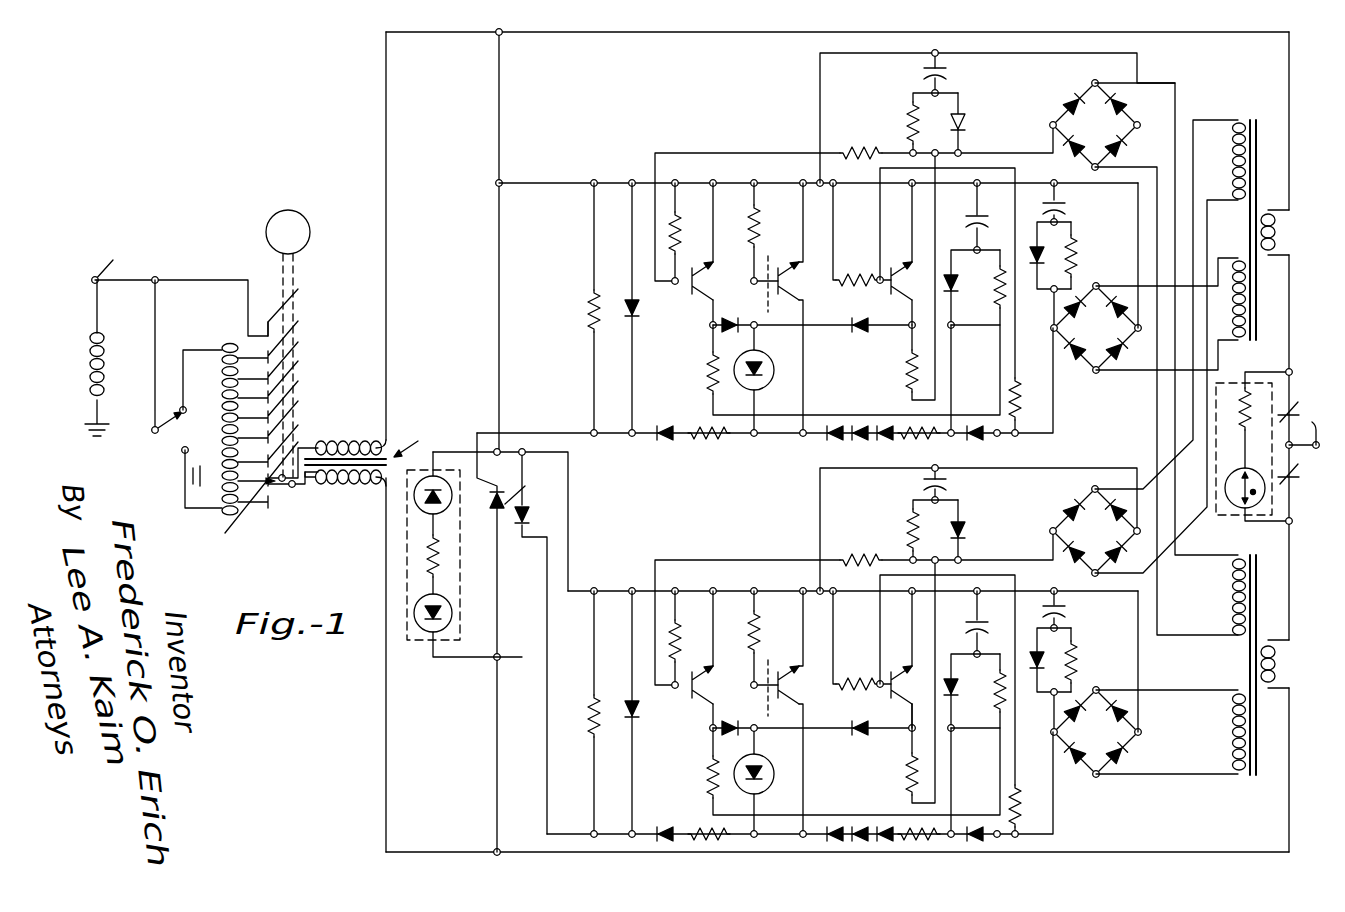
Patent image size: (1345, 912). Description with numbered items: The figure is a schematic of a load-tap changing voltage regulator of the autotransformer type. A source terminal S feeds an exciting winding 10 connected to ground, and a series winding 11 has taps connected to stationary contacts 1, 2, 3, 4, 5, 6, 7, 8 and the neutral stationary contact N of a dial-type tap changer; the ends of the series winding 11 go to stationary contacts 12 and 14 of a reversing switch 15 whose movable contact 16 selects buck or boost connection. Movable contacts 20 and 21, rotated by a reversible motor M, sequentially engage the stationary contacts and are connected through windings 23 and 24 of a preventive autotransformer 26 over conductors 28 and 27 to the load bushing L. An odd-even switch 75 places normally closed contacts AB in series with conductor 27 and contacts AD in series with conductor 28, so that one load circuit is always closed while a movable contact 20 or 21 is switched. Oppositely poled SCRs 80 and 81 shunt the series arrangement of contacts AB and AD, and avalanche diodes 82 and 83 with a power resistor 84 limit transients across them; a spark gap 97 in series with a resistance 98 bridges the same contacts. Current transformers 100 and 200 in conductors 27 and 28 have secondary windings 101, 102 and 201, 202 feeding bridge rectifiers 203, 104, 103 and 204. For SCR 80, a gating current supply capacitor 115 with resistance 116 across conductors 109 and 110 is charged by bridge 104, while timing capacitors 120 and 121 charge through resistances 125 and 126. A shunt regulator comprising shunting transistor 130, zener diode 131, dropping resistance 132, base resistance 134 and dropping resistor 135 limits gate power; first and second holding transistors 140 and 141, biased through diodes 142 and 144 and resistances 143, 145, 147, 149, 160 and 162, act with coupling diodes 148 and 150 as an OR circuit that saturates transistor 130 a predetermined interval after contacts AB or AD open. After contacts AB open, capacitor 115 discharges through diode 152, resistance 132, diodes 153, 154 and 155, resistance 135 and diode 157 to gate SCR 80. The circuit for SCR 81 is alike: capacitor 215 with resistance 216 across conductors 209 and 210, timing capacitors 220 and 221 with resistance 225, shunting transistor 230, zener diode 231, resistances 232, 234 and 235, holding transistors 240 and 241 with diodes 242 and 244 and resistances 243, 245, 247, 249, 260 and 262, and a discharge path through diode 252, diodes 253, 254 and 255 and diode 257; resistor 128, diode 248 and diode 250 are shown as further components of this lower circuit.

The stationary contact 1 is at (278, 332).
The stationary contact 2 is at (279, 352).
The stationary contact 3 is at (279, 372).
The stationary contact 4 is at (279, 393).
The stationary contact 5 is at (279, 413).
The stationary contact 6 is at (256, 500).
The stationary contact 7 is at (268, 480).
The stationary contact 8 is at (284, 496).
The exciting winding 10 is at (90, 378).
The series winding 11 is at (216, 476).
The stationary contact of reversing switch 12 is at (201, 381).
The stationary contact of reversing switch 14 is at (180, 455).
The reversing switch 15 is at (198, 447).
The movable contact 16 is at (176, 416).
The movable contact 20 is at (282, 487).
The movable contact 21 is at (280, 442).
The reactor winding 23 is at (346, 485).
The reactor winding 24 is at (358, 443).
The preventive autotransformer 26 is at (414, 433).
The conductor 27 is at (614, 34).
The conductor 28 is at (605, 852).
The odd-even switch 75 is at (1320, 473).
The silicon controlled rectifier 80 is at (514, 642).
The silicon controlled rectifier 81 is at (530, 517).
The avalanche diode 82 is at (440, 505).
The avalanche diode 83 is at (446, 598).
The power resistor 84 is at (440, 560).
The spark gap 97 is at (1231, 479).
The resistance 98 is at (1250, 426).
The current transformer 100 is at (1316, 246).
The secondary winding 101 is at (1230, 164).
The secondary winding 102 is at (1238, 338).
The bridge rectifier 103 is at (1112, 141).
The bridge rectifier 104 is at (1113, 343).
The conductor 109 is at (780, 183).
The conductor 110 is at (786, 436).
The gating current supply capacitor 115 is at (979, 229).
The resistance 116 is at (996, 297).
The timing capacitor 120 is at (948, 72).
The timing capacitor 121 is at (1064, 204).
The resistance 125 is at (908, 124).
The resistance 126 is at (1078, 244).
The resistor 128 is at (1078, 656).
The shunting transistor 130 is at (790, 262).
The reference voltage zener diode 131 is at (758, 384).
The voltage dropping resistance 132 is at (960, 440).
The base resistance 134 is at (742, 232).
The dropping resistor 135 is at (712, 442).
The first holding transistor 140 is at (705, 300).
The second holding transistor 141 is at (898, 262).
The diode 142 is at (968, 123).
The resistance 143 is at (852, 153).
The diode 144 is at (1037, 268).
The resistance 145 is at (1030, 399).
The resistance 147 is at (705, 376).
The coupling diode 148 is at (728, 334).
The resistance 149 is at (930, 369).
The coupling diode 150 is at (834, 343).
The diode 152 is at (958, 293).
The diode 153 is at (884, 428).
The diode 154 is at (858, 428).
The diode 155 is at (832, 428).
The diode 157 is at (664, 442).
The resistance 160 is at (856, 272).
The resistance 162 is at (678, 232).
The current transformer 200 is at (1316, 676).
The secondary winding 201 is at (1228, 596).
The secondary winding 202 is at (1228, 735).
The bridge rectifier 203 is at (1112, 547).
The bridge rectifier 204 is at (1113, 747).
The conductor 209 is at (780, 591).
The conductor 210 is at (772, 840).
The gating current supply capacitor 215 is at (979, 633).
The resistance 216 is at (996, 701).
The timing capacitor 220 is at (948, 483).
The timing capacitor 221 is at (1064, 610).
The resistance 225 is at (908, 532).
The shunting transistor 230 is at (790, 666).
The reference voltage zener diode 231 is at (758, 787).
The voltage dropping resistance 232 is at (912, 842).
The base resistance 234 is at (742, 636).
The dropping resistance 235 is at (712, 842).
The first holding transistor 240 is at (705, 704).
The second holding transistor 241 is at (898, 666).
The diode 242 is at (968, 531).
The resistance 243 is at (852, 560).
The diode 244 is at (1037, 690).
The resistance 245 is at (1030, 803).
The resistance 247 is at (705, 780).
The diode 248 is at (728, 737).
The resistance 249 is at (910, 778).
The diode 250 is at (834, 746).
The diode 252 is at (958, 697).
The diode 253 is at (884, 828).
The diode 254 is at (858, 842).
The diode 255 is at (832, 828).
The diode 257 is at (664, 829).
The resistance 260 is at (856, 678).
The resistance 262 is at (678, 638).
The source terminal S is at (107, 259).
The neutral stationary contact N is at (272, 338).
The reversible motor M is at (288, 344).
The odd-even switch contacts AB is at (1301, 394).
The odd-even switch contacts AD is at (1301, 494).
The load bushing L is at (1313, 419).